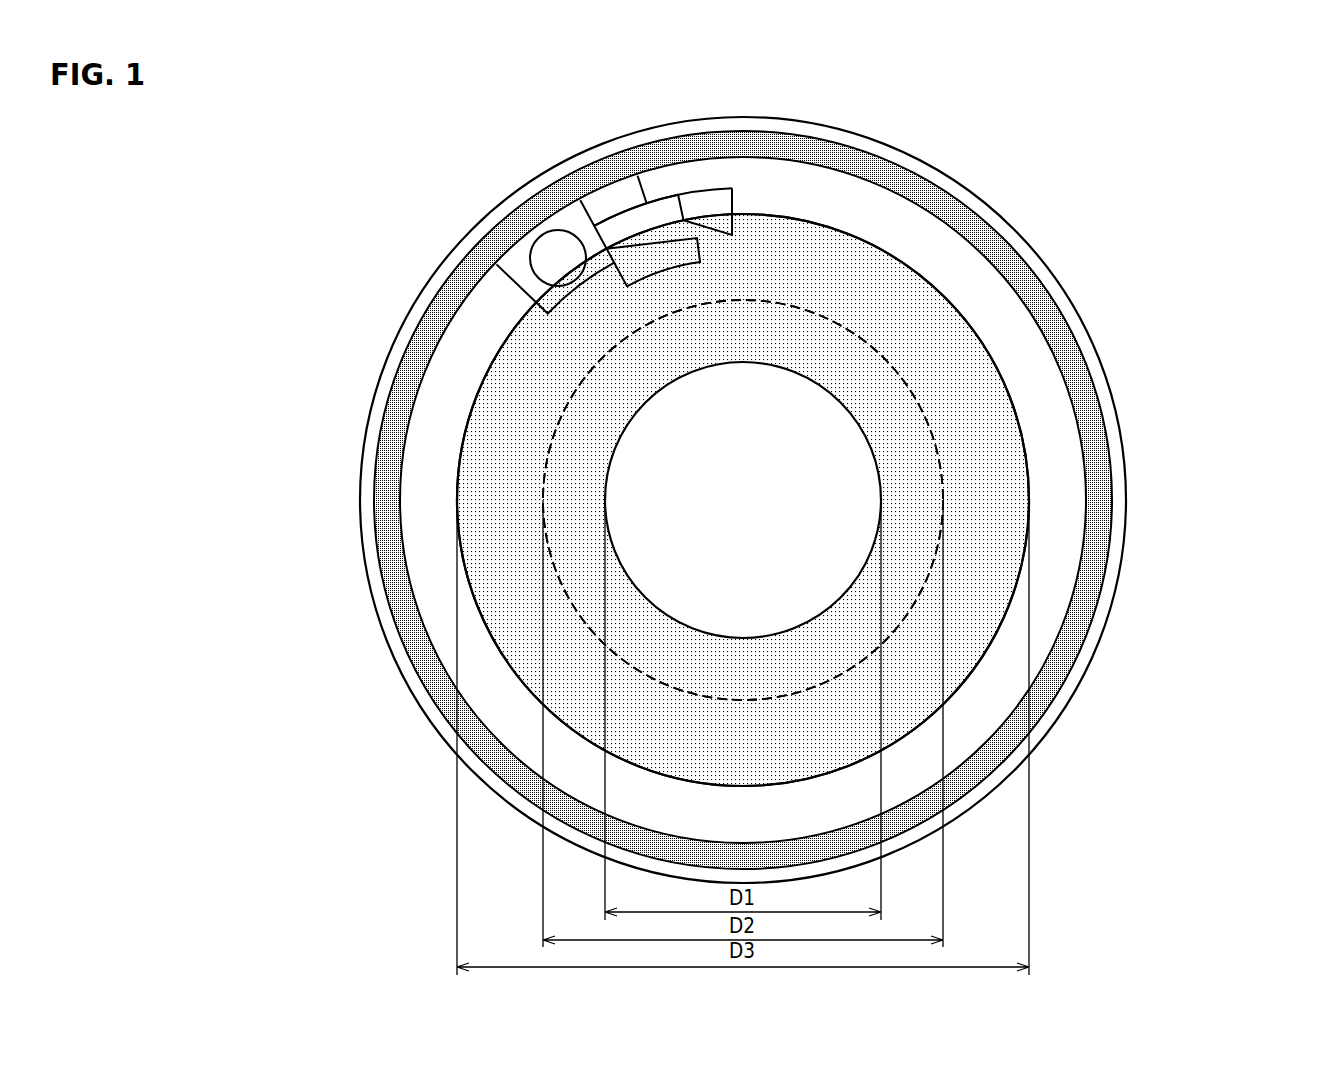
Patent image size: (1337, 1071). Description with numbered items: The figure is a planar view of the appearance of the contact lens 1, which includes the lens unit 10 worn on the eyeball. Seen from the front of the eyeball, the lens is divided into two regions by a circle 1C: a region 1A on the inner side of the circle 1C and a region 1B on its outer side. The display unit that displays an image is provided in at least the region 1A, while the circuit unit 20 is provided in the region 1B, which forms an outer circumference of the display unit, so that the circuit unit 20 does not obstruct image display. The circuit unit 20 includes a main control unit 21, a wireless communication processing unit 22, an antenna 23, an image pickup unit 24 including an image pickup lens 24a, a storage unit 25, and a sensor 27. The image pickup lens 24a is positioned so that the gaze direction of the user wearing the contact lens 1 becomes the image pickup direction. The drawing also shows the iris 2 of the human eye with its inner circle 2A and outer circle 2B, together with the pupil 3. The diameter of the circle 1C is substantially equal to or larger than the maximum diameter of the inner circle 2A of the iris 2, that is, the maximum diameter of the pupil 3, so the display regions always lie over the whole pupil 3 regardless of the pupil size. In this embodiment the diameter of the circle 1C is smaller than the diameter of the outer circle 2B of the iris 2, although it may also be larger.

The contact lens 1 is at (838, 469).
The lens unit 10 is at (1043, 257).
The region 1A is at (867, 372).
The region 1B is at (955, 385).
The circle 1C is at (930, 437).
The iris 2 is at (473, 472).
The inner circle 2A is at (600, 405).
The outer circle 2B is at (463, 428).
The pupil 3 is at (848, 484).
The circuit unit 20 is at (492, 316).
The main control unit 21 is at (662, 199).
The wireless communication processing unit 22 is at (611, 189).
The antenna 23 is at (527, 213).
The image pickup unit 24 is at (502, 270).
The image pickup lens 24a is at (531, 248).
The storage unit 25 is at (722, 188).
The sensor 27 is at (700, 256).